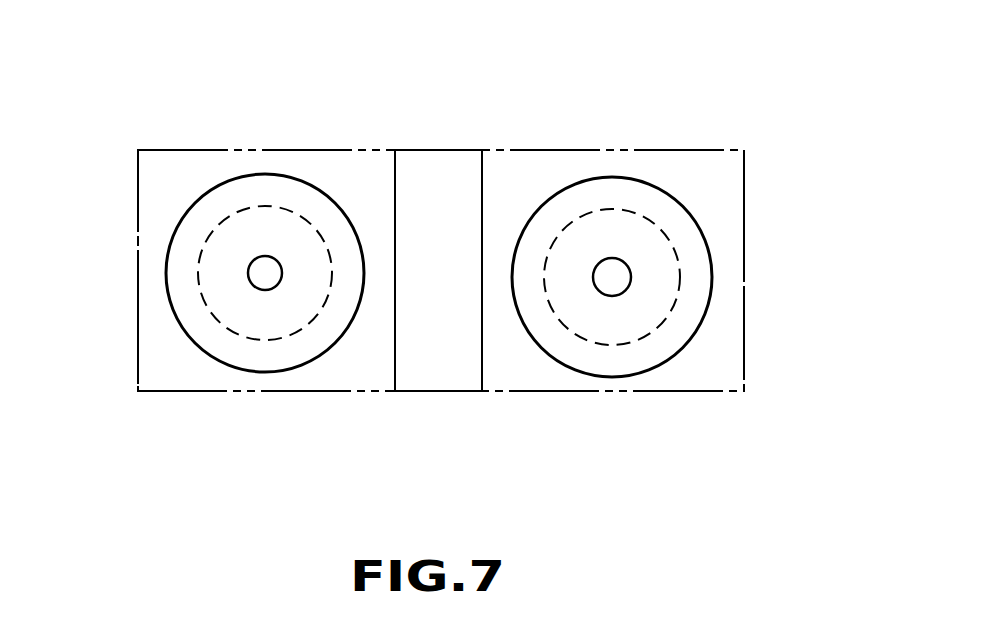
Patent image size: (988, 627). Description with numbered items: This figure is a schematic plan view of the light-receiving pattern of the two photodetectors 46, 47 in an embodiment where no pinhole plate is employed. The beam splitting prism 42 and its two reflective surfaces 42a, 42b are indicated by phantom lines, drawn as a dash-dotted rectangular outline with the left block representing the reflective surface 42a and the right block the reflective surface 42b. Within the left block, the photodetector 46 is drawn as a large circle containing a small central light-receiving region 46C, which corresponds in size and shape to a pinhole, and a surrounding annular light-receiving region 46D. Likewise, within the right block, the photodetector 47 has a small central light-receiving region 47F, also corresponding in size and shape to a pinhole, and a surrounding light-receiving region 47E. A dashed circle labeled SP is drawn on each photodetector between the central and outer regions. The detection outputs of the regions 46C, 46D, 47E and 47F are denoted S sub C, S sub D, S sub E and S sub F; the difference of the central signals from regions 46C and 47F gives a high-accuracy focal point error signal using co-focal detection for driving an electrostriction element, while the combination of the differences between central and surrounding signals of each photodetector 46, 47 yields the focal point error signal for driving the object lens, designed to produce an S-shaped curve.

The beam splitting prism 42 is at (732, 150).
The reflective surface 42a is at (150, 173).
The reflective surface 42b is at (672, 160).
The photodetector 46 is at (170, 224).
The light-receiving region 46C is at (257, 272).
The light-receiving region 46D is at (187, 315).
The photodetector 47 is at (712, 225).
The light-receiving region 47E is at (705, 273).
The light-receiving region 47F is at (618, 278).
The contact position / sheet path circle SP is at (256, 205).